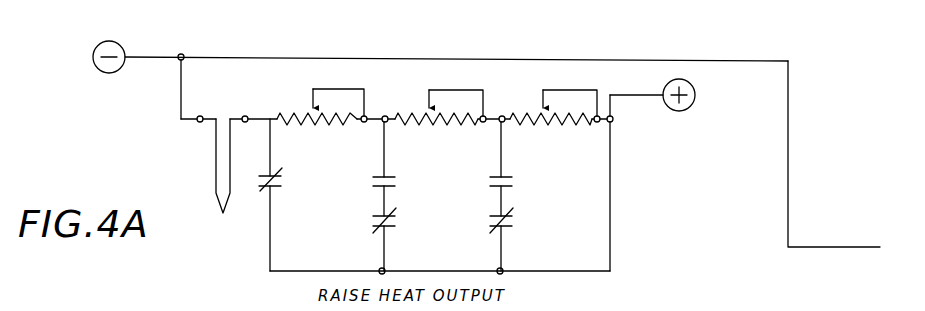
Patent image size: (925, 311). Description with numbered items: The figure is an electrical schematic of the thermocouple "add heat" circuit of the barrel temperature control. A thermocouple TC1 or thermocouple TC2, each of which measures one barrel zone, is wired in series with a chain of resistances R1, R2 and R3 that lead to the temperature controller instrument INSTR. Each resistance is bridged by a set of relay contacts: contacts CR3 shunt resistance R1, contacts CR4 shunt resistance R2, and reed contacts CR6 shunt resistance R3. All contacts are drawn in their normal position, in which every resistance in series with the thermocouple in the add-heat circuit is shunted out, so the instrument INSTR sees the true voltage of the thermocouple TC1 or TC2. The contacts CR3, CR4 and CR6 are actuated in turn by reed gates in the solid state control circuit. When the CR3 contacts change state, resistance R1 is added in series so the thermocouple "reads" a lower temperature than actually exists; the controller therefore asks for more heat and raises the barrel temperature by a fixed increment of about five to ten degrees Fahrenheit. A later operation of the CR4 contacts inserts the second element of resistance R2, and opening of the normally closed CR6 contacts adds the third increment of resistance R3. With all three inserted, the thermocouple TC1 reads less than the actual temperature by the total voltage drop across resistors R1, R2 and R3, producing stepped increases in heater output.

The thermocouple TC1 is at (109, 45).
The thermocouple TC2 is at (216, 178).
The resistance R1 is at (310, 102).
The resistance R2 is at (427, 102).
The resistance R3 is at (541, 102).
The instrument thermocouple input INSTR is at (707, 110).
The contacts CR3 is at (350, 186).
The contacts CR4 is at (465, 204).
The reed contacts CR6 is at (522, 221).